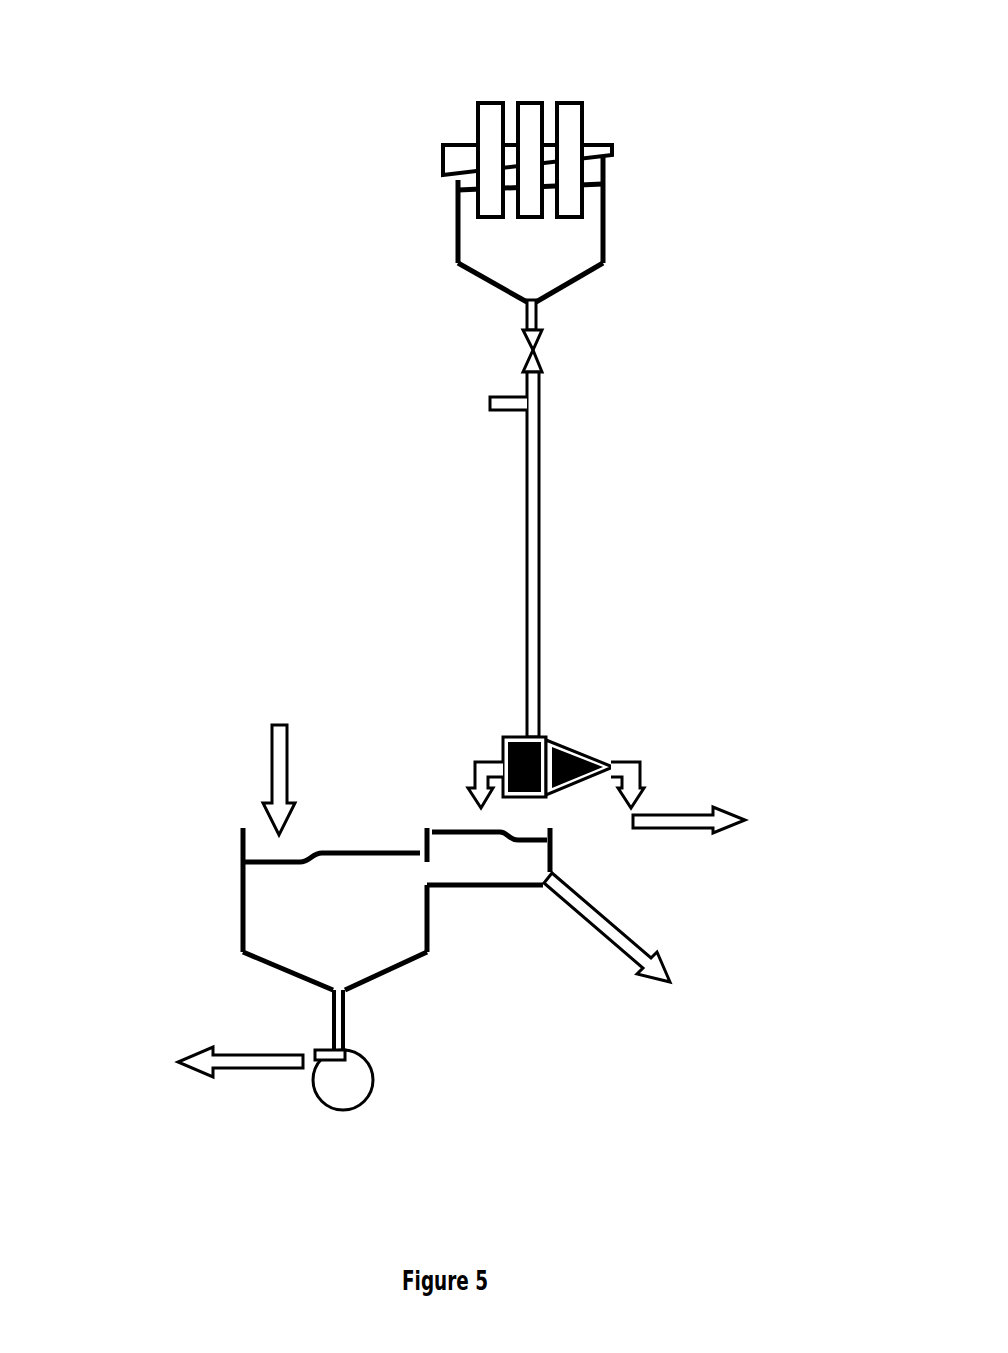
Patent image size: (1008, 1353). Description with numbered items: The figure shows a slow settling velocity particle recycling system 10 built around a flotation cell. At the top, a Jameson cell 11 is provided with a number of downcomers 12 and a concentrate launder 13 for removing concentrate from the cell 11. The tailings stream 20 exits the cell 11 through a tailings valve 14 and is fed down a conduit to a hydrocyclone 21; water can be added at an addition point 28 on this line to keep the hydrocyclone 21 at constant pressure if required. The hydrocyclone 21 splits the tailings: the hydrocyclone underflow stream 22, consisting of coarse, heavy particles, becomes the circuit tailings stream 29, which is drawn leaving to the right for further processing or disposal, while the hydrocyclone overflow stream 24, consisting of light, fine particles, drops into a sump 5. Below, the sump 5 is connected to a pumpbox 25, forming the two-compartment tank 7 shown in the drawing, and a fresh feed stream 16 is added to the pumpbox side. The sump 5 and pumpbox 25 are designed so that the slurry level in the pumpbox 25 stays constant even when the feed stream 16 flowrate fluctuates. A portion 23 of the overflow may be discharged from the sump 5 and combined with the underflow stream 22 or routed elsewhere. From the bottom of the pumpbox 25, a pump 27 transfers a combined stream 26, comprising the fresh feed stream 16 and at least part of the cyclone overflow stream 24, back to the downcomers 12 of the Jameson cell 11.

The slow settling velocity particle recycling system 10 is at (207, 363).
The Jameson cell 11 is at (563, 257).
The downcomers 12 is at (563, 100).
The concentrate launder 13 is at (443, 147).
The tailings valve 14 is at (543, 351).
The tailings stream 20 is at (550, 527).
The addition point 28 is at (480, 395).
The hydrocyclone 21 is at (552, 727).
The hydrocyclone underflow stream 22 is at (650, 768).
The hydrocyclone overflow stream 24 is at (465, 770).
The circuit tailings stream 29 is at (745, 805).
The fresh feed stream 16 is at (268, 750).
The settling tank 7 is at (331, 952).
The pumpbox 25 is at (385, 912).
The sump 5 is at (503, 863).
The portion of the hydrocyclone overflow stream 23 is at (600, 898).
The combined stream 26 is at (219, 1062).
The pump 27 is at (350, 1085).